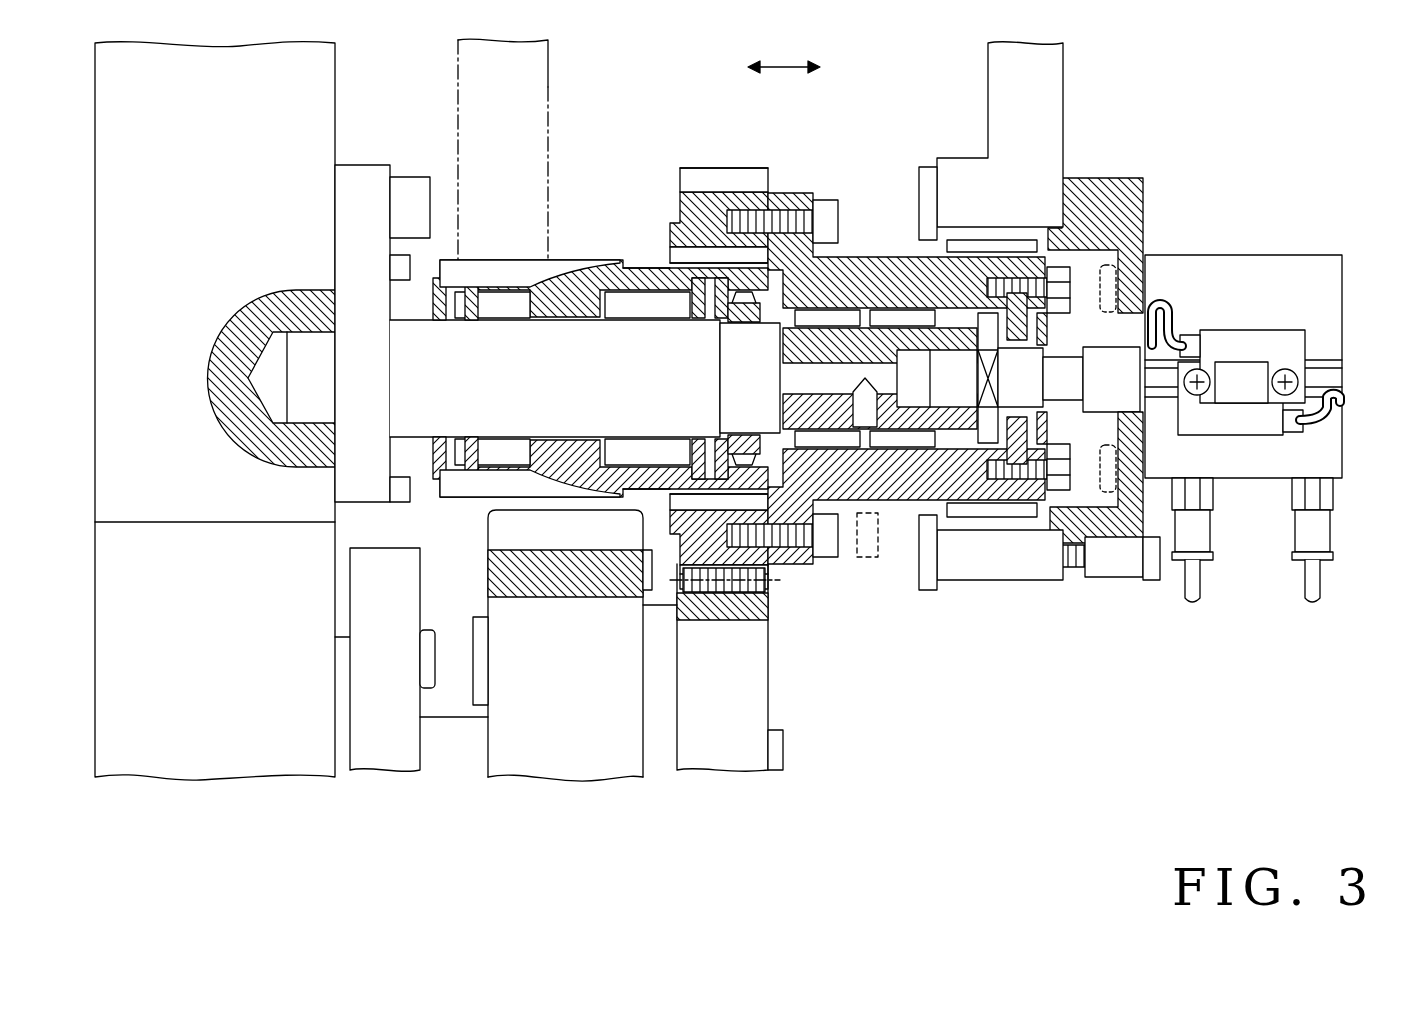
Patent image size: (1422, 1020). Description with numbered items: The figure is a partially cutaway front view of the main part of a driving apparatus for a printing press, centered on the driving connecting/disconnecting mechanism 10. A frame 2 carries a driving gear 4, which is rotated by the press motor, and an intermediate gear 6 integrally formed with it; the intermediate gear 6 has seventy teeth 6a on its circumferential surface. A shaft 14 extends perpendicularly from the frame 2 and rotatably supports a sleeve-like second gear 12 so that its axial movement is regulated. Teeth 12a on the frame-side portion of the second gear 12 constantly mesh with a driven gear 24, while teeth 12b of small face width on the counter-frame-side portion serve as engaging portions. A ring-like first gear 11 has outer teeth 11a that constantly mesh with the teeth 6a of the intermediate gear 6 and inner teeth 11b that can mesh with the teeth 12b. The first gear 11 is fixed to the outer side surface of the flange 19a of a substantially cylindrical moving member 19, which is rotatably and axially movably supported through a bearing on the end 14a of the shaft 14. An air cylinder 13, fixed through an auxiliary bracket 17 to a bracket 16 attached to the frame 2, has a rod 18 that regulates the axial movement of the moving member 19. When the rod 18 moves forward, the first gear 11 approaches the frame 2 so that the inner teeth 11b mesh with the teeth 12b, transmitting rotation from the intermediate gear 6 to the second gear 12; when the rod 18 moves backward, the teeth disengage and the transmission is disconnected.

The frame 2 is at (335, 85).
The driving gear 4 is at (648, 730).
The intermediate gear 6 is at (746, 667).
The teeth 6a is at (768, 593).
The driving connecting/disconnecting mechanism 10 is at (970, 412).
The first gear 11 is at (720, 333).
The outer teeth 11a is at (713, 178).
The inner teeth 11b is at (748, 260).
The second gear 12 is at (600, 308).
The teeth 12a is at (565, 272).
The teeth 12b is at (672, 266).
The air cylinder 13 is at (1342, 448).
The shaft 14 is at (423, 362).
The end of the shaft 14a is at (838, 425).
The bracket 16 is at (1063, 85).
The auxiliary bracket 17 is at (1143, 178).
The rod 18 is at (1096, 414).
The moving member 19 is at (898, 349).
The flange 19a is at (796, 194).
The driven gear 24 is at (548, 87).